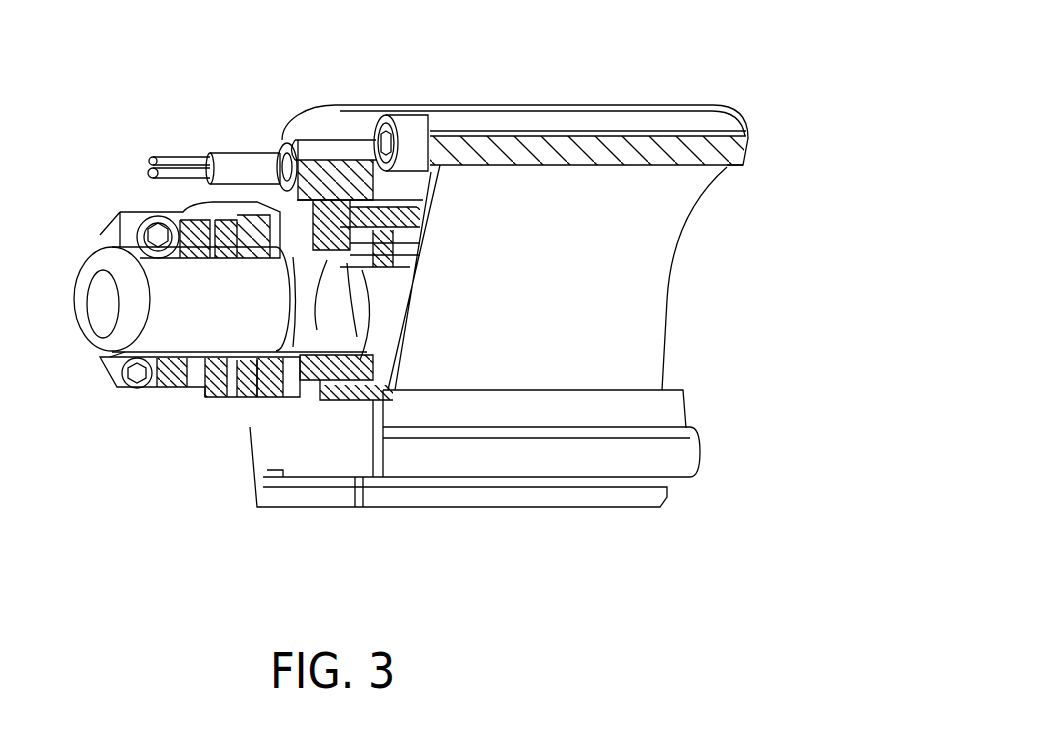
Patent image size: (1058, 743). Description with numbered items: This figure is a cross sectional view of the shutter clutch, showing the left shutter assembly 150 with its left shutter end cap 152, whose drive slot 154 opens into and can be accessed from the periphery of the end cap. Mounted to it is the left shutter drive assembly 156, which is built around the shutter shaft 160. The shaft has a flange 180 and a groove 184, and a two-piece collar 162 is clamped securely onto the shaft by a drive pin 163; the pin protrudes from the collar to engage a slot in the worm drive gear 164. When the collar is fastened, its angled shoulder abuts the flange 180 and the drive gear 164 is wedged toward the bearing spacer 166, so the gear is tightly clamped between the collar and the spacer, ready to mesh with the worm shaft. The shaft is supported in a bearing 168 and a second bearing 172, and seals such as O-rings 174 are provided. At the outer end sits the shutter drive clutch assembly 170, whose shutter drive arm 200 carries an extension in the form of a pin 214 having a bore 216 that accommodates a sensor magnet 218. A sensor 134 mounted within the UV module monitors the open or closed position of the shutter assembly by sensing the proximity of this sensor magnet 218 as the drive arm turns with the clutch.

The sensor 134 is at (228, 165).
The left shutter assembly 150 is at (640, 325).
The left shutter end cap 152 is at (352, 93).
The slot 154 is at (372, 123).
The left shutter drive assembly 156 is at (82, 347).
The shutter shaft 160 is at (78, 297).
The collar 162 is at (118, 215).
The drive pin 163 is at (155, 215).
The drive gear 164 is at (162, 402).
The bearing spacer 166 is at (207, 393).
The bearing 168 is at (241, 400).
The shutter drive clutch assembly 170 is at (290, 403).
The bearing 172 is at (363, 362).
The O-rings 174 is at (363, 267).
The flange 180 is at (123, 358).
The groove 184 is at (145, 377).
The shutter drive arm 200 is at (285, 137).
The pin 214 is at (307, 147).
The bore 216 is at (225, 163).
The sensor magnet 218 is at (283, 152).